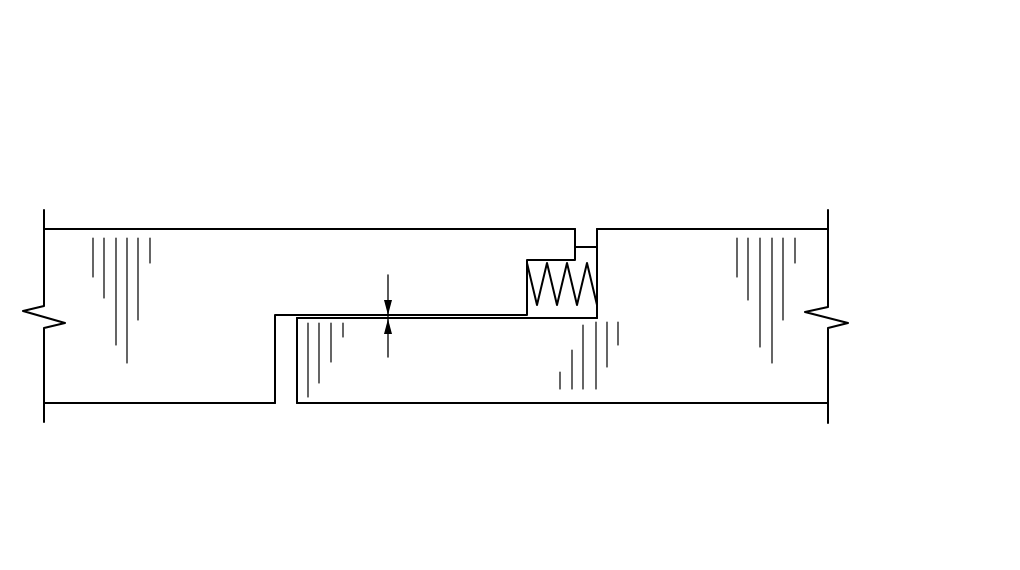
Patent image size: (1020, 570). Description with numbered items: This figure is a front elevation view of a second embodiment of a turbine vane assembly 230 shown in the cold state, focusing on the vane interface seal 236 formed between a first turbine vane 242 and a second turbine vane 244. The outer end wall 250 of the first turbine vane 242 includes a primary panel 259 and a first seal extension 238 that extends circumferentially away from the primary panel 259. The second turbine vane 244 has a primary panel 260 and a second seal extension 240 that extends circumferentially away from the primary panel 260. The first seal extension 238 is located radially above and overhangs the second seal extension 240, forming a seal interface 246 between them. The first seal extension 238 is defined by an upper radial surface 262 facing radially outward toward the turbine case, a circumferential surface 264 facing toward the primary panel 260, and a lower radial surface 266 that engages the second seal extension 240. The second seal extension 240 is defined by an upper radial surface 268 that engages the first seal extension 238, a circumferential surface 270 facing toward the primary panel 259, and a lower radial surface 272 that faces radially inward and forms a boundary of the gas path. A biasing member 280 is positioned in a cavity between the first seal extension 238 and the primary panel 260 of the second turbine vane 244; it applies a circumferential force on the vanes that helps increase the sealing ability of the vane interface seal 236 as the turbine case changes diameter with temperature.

The turbine vane assembly 230 is at (662, 148).
The vane interface seal 236 is at (428, 108).
The first seal extension 238 is at (300, 253).
The second seal extension 240 is at (430, 388).
The first turbine vane 242 is at (183, 125).
The second turbine vane 244 is at (670, 450).
The seal interface 246 is at (388, 275).
The outer end wall 250 is at (145, 157).
The primary panel 259 is at (197, 248).
The primary panel 260 is at (702, 388).
The upper radial surface 262 is at (417, 229).
The circumferential surface 264 is at (597, 247).
The lower radial surface 266 is at (443, 331).
The upper radial surface 268 is at (487, 318).
The circumferential surface 270 is at (297, 360).
The lower radial surface 272 is at (352, 405).
The biasing member 280 is at (586, 218).